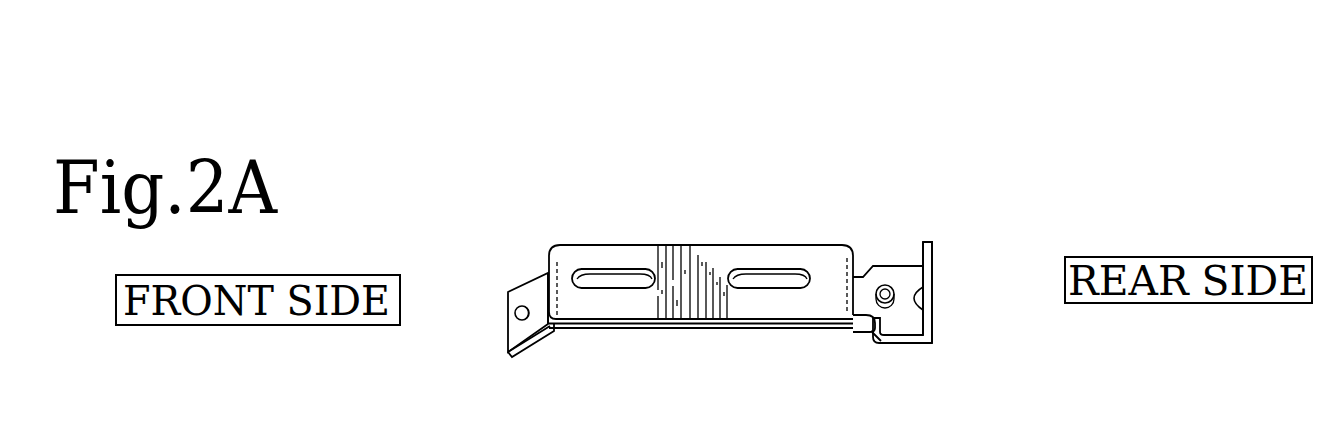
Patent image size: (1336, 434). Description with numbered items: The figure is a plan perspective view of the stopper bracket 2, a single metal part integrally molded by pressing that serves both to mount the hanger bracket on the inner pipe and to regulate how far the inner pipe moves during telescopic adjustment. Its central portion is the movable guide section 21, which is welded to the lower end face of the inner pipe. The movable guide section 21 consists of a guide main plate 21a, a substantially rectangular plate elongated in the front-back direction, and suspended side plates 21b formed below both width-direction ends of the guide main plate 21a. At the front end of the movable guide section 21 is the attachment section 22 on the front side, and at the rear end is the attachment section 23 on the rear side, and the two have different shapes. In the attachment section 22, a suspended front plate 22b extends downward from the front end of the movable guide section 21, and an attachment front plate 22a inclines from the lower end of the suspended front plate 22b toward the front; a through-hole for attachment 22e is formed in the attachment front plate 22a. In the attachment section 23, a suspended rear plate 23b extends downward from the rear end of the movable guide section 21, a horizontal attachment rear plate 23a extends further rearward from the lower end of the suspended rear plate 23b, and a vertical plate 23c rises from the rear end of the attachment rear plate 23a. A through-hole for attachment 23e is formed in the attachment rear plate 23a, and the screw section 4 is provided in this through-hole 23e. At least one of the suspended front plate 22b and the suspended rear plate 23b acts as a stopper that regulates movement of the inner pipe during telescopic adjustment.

The stopper bracket 2 is at (797, 246).
The screw section 4 is at (887, 288).
The movable guide section 21 is at (747, 307).
The guide main plate 21a is at (783, 307).
The suspended side plate 21b is at (600, 328).
The attachment section on the front side 22 is at (505, 315).
The attachment front plate 22a is at (535, 348).
The suspended front plate 22b is at (549, 287).
The through-hole for attachment 22e is at (525, 307).
The attachment section on the rear side 23 is at (932, 343).
The attachment rear plate 23a is at (903, 343).
The suspended rear plate 23b is at (868, 328).
The vertical plate 23c is at (932, 250).
The through-hole for attachment 23e is at (900, 292).